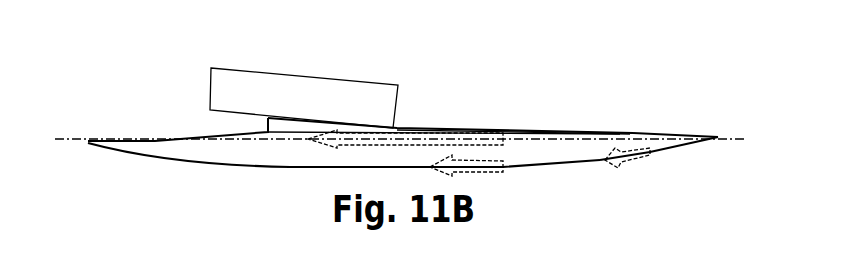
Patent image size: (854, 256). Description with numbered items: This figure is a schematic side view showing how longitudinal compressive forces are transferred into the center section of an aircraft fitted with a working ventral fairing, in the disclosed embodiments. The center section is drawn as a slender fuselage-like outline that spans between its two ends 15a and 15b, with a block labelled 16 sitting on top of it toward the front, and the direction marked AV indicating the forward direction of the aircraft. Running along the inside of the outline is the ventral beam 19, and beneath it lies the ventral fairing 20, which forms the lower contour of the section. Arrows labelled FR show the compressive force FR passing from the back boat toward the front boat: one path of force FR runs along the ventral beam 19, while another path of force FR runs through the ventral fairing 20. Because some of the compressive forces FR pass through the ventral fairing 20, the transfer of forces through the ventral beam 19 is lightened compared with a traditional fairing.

The first end of float 15a is at (74, 139).
The second end of float 15b is at (717, 136).
The load/mass 16 is at (304, 98).
The ventral beam 19 is at (513, 127).
The ventral fairing 20 is at (528, 168).
The compressive force FR is at (432, 132).
The forward direction AV is at (167, 34).